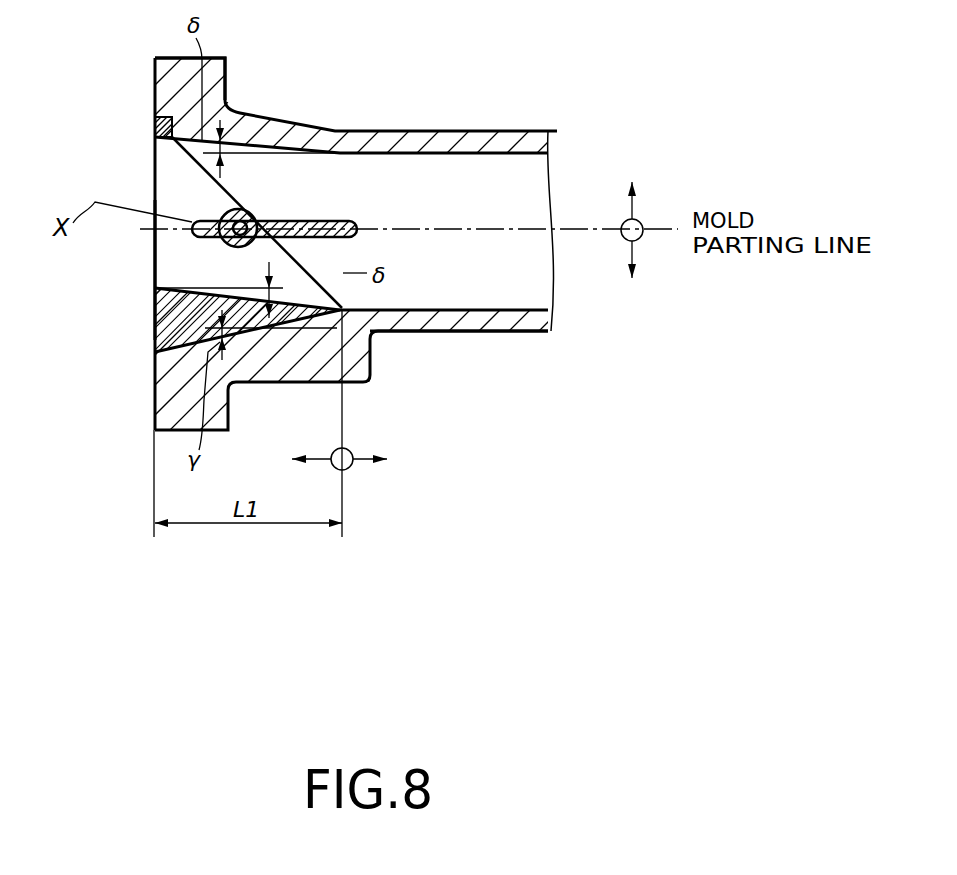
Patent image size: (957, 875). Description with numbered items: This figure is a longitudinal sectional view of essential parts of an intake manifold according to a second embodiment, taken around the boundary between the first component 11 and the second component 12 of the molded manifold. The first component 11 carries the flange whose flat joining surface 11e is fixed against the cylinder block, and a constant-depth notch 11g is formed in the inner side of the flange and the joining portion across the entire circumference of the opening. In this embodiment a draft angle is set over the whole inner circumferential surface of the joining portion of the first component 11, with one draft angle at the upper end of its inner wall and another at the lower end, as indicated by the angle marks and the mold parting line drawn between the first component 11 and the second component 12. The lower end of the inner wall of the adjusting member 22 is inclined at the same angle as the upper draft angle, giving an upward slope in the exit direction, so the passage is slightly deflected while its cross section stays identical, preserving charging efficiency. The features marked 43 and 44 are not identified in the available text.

The first component 11 is at (413, 129).
The joining surface 11e is at (152, 83).
The notch 11g is at (172, 139).
The second component 12 is at (440, 345).
The adjusting member 22 is at (146, 270).
The gate hole 43 is at (256, 214).
The slot 44 is at (325, 220).